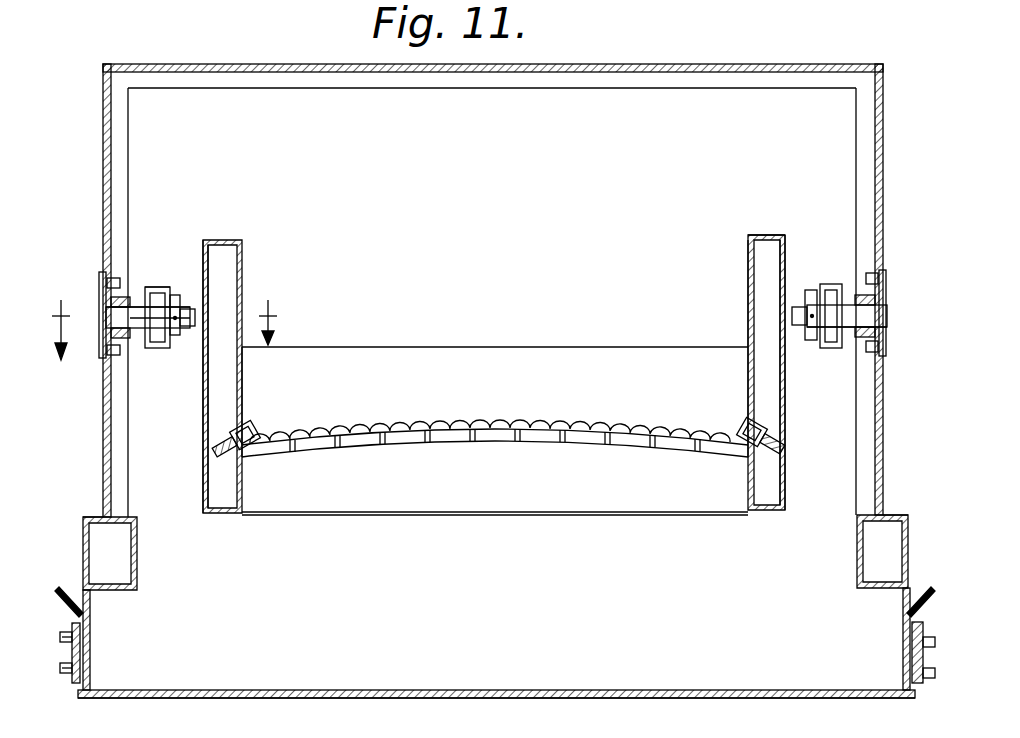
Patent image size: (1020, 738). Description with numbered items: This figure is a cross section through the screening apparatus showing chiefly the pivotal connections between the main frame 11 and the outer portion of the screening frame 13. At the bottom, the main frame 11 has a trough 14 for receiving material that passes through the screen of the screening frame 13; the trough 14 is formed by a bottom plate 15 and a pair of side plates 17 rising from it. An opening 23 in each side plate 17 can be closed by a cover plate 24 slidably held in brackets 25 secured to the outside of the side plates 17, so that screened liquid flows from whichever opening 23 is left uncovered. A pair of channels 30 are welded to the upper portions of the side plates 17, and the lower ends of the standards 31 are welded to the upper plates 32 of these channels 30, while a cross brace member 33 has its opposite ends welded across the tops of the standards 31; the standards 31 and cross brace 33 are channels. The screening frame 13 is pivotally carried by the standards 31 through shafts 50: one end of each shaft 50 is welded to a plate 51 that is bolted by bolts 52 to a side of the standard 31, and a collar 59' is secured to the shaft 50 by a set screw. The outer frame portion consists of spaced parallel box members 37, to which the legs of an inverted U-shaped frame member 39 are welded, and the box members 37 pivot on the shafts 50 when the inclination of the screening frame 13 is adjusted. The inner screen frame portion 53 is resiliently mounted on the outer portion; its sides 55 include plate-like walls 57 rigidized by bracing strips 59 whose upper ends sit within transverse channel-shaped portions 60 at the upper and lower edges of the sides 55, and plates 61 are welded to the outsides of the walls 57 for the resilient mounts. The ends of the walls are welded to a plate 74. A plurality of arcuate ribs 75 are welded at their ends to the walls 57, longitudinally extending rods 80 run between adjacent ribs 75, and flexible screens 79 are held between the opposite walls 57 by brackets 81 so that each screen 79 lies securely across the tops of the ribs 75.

The main frame 11 is at (780, 698).
The screening frame 13 is at (158, 287).
The trough 14 is at (167, 315).
The bottom plate 15 is at (600, 690).
The side plates 17 is at (83, 540).
The opening 23 is at (90, 622).
The cover plate 24 is at (90, 652).
The brackets 25 is at (78, 690).
The channels 30 is at (137, 566).
The standards 31 is at (103, 428).
The upper plates 32 is at (95, 517).
The cross brace member 33 is at (666, 64).
The box members 37 is at (142, 340).
The inverted U-shaped frame member 39 is at (158, 350).
The shafts 50 is at (152, 300).
The plate 51 is at (100, 274).
The bolts 52 is at (100, 282).
The inner screen frame portion 53 is at (748, 262).
The sides 55 is at (243, 362).
The walls 57 is at (243, 388).
The bracing strips 59 is at (496, 374).
The collar 59' is at (493, 307).
The channel-shaped portions 60 is at (226, 240).
The plates 61 is at (204, 240).
The plate 74 is at (450, 515).
The ribs 75 is at (500, 443).
The flexible screens 79 is at (513, 430).
The rods 80 is at (364, 448).
The brackets 81 is at (255, 426).